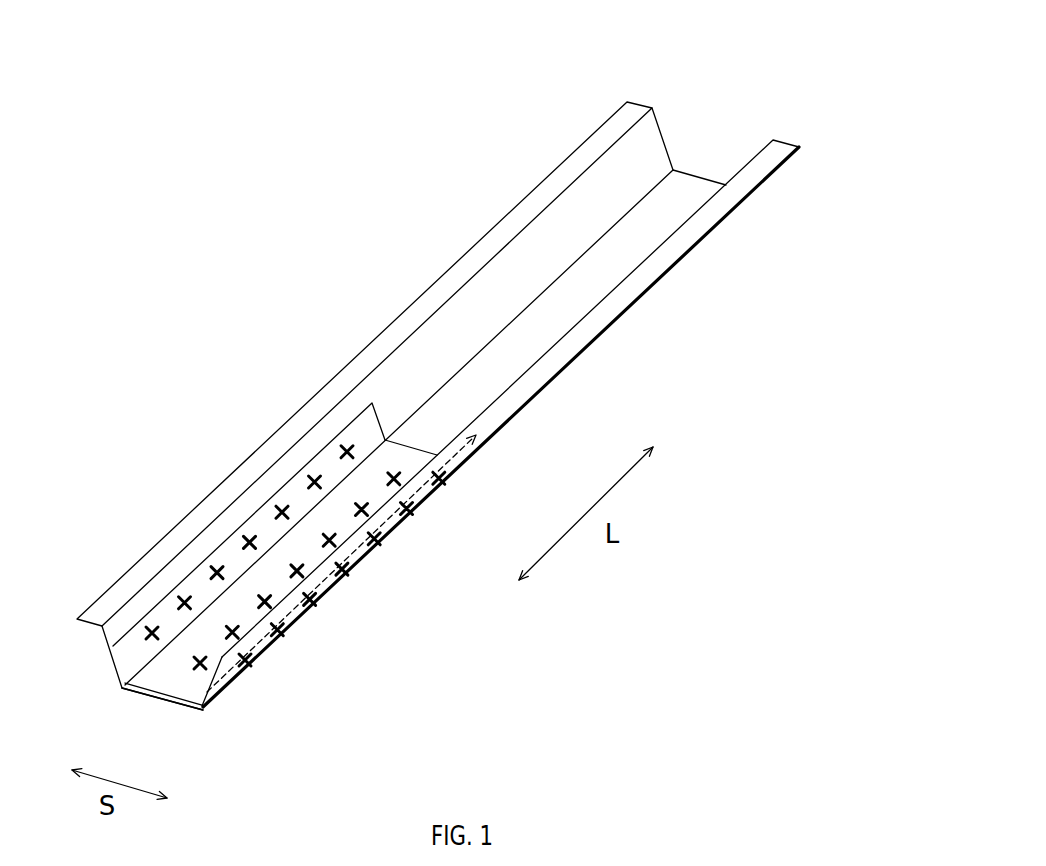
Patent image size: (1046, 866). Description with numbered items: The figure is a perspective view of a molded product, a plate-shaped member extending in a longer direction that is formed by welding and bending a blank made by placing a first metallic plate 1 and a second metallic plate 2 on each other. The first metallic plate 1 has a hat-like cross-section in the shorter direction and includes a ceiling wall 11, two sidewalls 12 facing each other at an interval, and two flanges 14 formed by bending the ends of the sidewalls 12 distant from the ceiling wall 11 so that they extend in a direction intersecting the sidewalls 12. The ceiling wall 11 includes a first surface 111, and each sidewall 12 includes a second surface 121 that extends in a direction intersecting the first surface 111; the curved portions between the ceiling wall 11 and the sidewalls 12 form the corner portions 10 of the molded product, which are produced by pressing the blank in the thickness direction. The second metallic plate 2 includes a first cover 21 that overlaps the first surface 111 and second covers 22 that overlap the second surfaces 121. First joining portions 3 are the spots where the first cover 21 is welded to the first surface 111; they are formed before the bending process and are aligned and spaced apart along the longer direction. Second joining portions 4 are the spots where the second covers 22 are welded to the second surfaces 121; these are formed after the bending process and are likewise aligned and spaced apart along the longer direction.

The first metallic plate 1 is at (464, 395).
The second metallic plate 2 is at (311, 497).
The first joining portions 3 is at (201, 669).
The second joining portions 4 is at (143, 620).
The corner portions 10 is at (118, 689).
The ceiling wall 11 is at (457, 364).
The first surface 111 is at (677, 184).
The sidewalls 12 is at (409, 398).
The second surface 121 is at (650, 123).
The flanges 14 is at (646, 101).
The first cover 21 is at (410, 445).
The second covers 22 is at (373, 402).